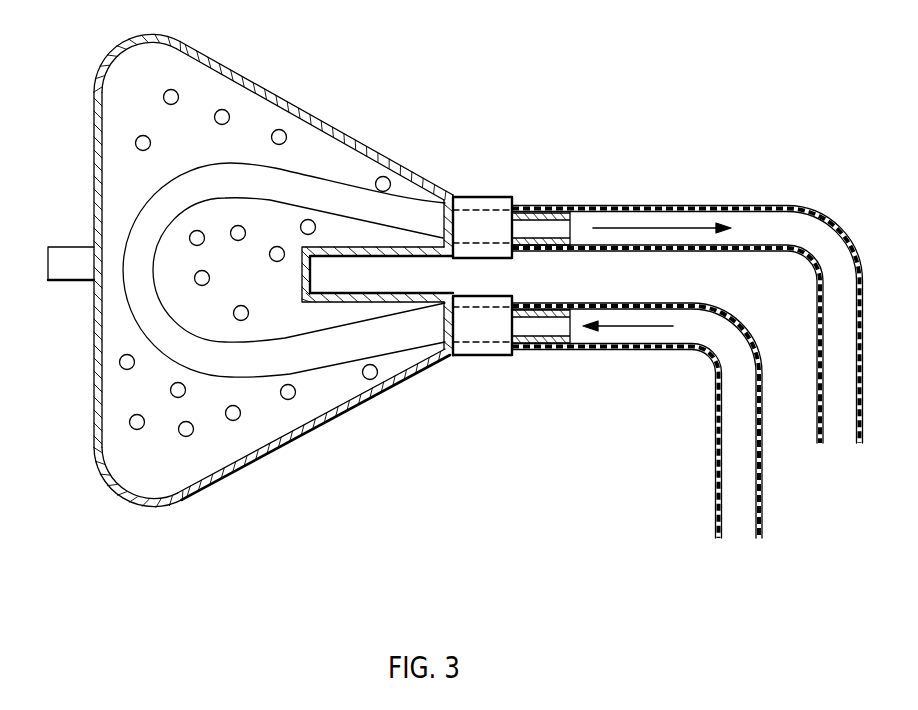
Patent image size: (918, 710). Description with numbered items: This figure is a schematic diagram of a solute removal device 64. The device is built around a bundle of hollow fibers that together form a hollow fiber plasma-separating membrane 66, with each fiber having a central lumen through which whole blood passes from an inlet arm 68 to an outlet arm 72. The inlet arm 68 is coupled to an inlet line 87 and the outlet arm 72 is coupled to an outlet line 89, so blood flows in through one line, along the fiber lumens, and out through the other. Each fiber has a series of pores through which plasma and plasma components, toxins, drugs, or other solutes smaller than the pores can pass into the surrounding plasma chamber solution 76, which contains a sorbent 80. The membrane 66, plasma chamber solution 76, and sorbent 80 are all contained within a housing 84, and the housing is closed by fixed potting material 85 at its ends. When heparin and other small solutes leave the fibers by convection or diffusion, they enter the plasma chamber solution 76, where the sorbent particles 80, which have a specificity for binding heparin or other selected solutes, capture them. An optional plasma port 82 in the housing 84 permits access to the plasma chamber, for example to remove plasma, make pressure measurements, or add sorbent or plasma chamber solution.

The solute removal device 64 is at (268, 479).
The hollow fiber plasma-separating membrane 66 is at (143, 222).
The inlet arm 68 is at (437, 360).
The outlet arm 72 is at (425, 217).
The plasma chamber solution 76 is at (222, 78).
The sorbent 80 is at (280, 130).
The plasma port 82 is at (66, 278).
The housing 84 is at (373, 140).
The potting material 85 is at (478, 200).
The inlet line 87 is at (642, 351).
The outlet line 89 is at (720, 205).